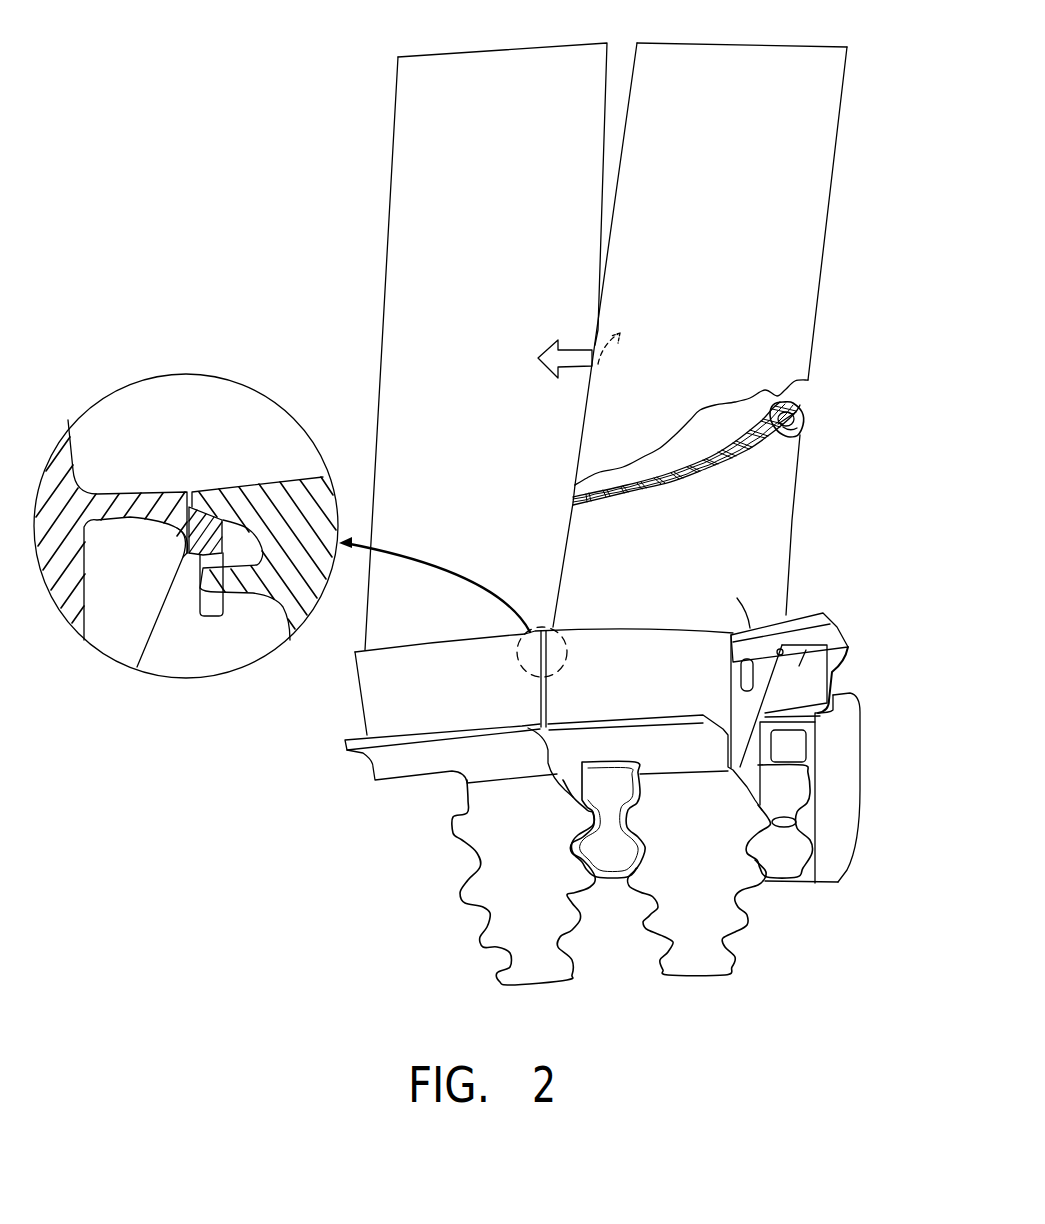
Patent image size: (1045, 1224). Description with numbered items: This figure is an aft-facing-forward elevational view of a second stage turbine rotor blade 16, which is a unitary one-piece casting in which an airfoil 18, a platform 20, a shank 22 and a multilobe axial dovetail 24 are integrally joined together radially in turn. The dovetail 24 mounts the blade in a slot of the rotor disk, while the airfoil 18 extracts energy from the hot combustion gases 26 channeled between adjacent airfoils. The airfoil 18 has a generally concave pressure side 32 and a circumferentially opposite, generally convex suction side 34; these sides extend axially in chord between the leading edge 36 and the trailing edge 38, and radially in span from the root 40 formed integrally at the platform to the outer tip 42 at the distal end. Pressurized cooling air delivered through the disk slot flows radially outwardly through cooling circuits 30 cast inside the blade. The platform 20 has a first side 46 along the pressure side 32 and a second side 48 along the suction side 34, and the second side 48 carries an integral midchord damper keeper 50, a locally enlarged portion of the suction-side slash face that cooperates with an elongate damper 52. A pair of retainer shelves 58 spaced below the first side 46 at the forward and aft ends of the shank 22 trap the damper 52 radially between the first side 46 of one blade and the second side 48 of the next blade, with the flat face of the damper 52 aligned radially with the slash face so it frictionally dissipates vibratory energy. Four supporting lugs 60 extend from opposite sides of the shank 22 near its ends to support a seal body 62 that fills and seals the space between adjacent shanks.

The turbine rotor blade 16 is at (852, 68).
The airfoil 18 is at (380, 293).
The platform 20 is at (823, 613).
The shank 22 is at (830, 685).
The multilobe axial dovetail 24 is at (752, 923).
The hot combustion gases 26 is at (580, 347).
The cooling circuit 30 is at (804, 422).
The pressure side 32 is at (743, 450).
The suction side 34 is at (751, 254).
The leading edge 36 is at (778, 402).
The trailing edge 38 is at (567, 522).
The root 40 is at (745, 625).
The tip 42 is at (712, 42).
The platform first side 46 is at (212, 488).
The platform second side 48 is at (165, 488).
The damper keeper 50 is at (185, 575).
The damper 52 is at (218, 612).
The retainer shelves 58 is at (197, 587).
The supporting lugs 60 is at (772, 823).
The seal body 62 is at (854, 759).